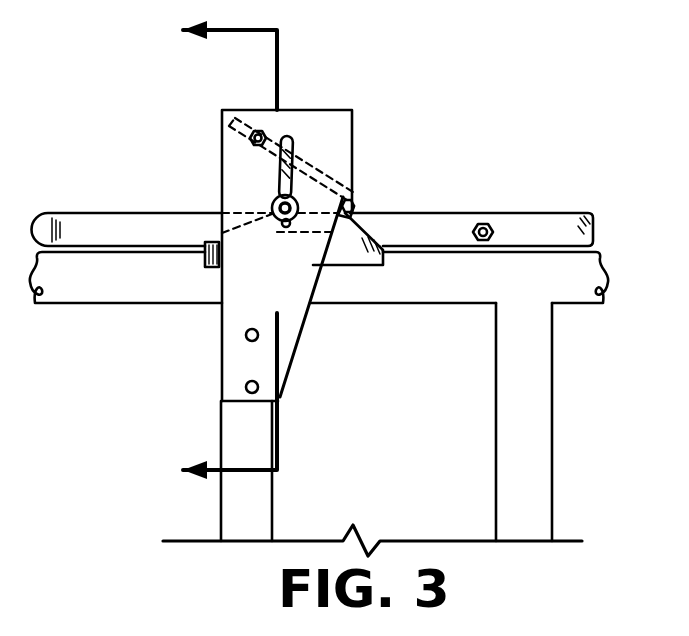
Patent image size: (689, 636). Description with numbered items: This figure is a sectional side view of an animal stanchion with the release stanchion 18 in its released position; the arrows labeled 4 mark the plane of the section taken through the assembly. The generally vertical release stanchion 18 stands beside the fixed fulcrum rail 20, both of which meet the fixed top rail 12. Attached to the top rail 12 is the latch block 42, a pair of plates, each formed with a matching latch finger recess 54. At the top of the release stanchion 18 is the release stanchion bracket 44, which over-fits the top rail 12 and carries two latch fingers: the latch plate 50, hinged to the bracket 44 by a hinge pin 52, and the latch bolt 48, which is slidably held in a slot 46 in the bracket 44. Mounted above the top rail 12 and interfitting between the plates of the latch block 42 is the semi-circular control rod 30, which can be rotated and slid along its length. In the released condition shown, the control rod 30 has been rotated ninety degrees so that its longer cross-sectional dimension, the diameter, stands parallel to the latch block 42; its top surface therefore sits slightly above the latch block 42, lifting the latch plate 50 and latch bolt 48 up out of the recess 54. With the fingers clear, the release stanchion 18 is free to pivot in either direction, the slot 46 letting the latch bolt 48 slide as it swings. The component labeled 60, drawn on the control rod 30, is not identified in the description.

The section line 4- 4 is at (217, 252).
The fixed top rail 12 is at (153, 290).
The pivotal release stanchion 18 is at (257, 490).
The fulcrum rail 20 is at (540, 462).
The control rod 30 is at (417, 222).
The latch block 42 is at (207, 243).
The release stanchion bracket 44 is at (290, 340).
The slot 46 is at (283, 181).
The latch bolt 48 is at (346, 199).
The latch plate 50 is at (298, 201).
The hinge pin 52 is at (259, 130).
The latch finger recess 54 is at (340, 223).
The nut 60 is at (483, 222).